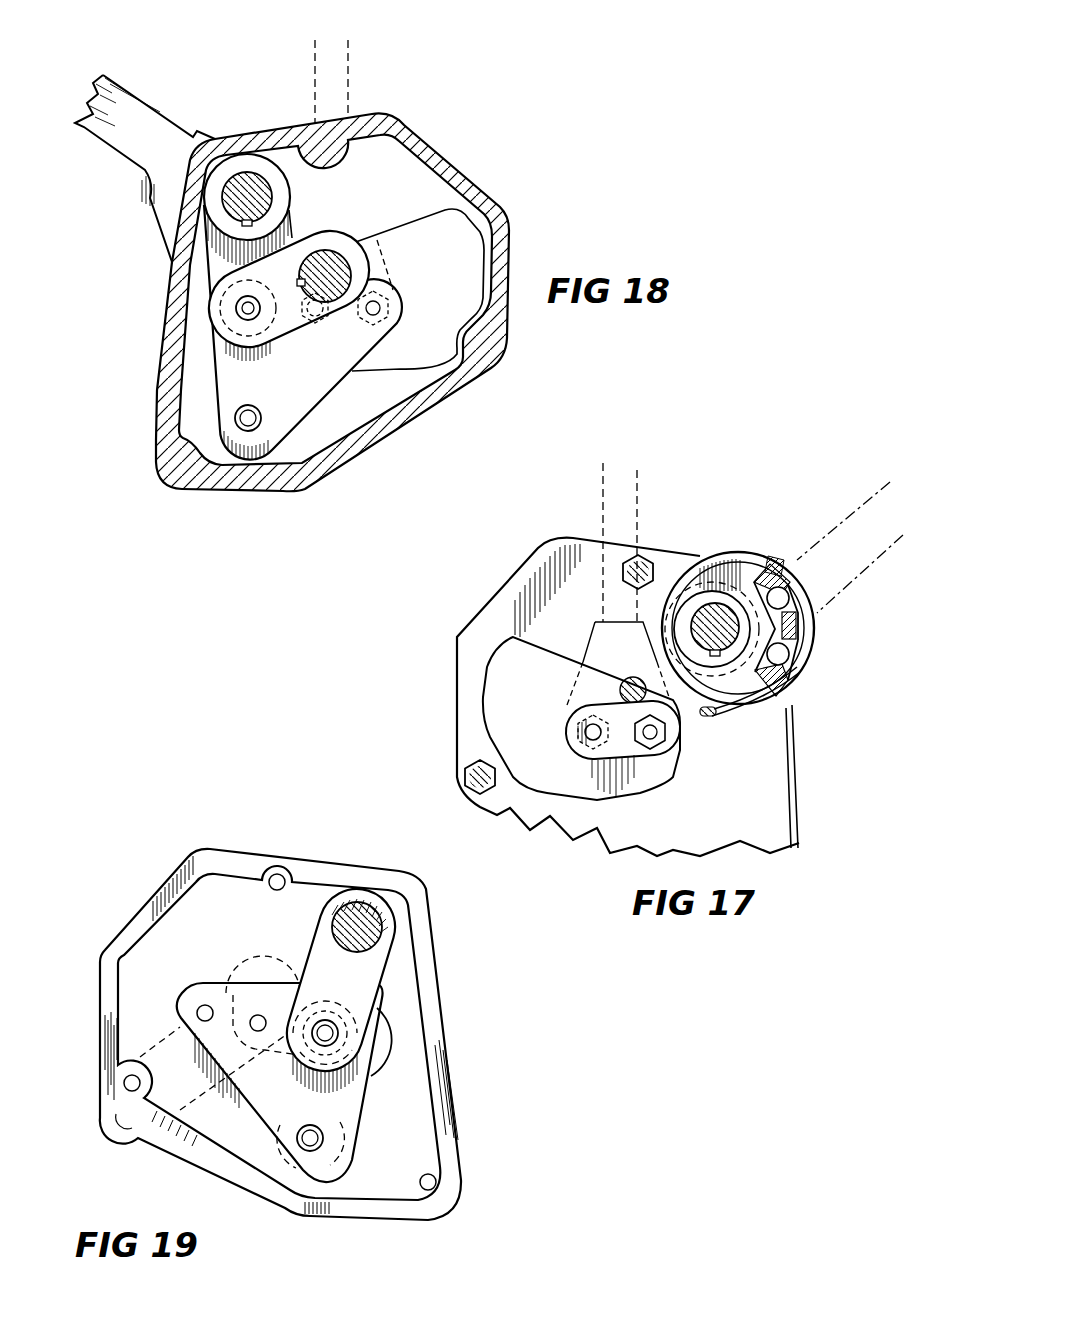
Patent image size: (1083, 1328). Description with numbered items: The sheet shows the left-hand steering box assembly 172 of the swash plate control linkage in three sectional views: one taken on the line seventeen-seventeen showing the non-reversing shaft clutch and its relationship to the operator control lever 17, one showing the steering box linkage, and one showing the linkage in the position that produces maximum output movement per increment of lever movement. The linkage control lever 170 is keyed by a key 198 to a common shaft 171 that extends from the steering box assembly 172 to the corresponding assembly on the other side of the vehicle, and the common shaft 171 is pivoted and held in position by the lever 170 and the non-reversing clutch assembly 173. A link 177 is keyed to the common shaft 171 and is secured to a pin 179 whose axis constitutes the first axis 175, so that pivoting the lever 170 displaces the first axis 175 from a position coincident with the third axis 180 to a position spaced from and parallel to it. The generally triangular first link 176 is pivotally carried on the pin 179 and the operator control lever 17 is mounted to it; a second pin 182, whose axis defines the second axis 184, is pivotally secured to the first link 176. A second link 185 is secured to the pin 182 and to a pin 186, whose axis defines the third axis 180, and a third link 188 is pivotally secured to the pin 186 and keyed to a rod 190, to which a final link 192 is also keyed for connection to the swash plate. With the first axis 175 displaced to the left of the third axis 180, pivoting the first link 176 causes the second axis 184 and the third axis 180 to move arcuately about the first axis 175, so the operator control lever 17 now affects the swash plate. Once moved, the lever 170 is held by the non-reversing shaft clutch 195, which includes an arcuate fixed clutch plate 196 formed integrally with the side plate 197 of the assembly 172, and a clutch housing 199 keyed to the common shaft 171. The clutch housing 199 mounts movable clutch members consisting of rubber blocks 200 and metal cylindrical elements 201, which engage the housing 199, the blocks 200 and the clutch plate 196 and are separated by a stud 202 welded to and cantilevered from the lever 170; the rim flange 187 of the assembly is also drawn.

In FIG. 18, the operator control lever 17 is at (350, 55).
In FIG. 17, the operator control lever 17 is at (600, 502).
In FIG. 18, the linkage control lever 170 is at (138, 93).
In FIG. 17, the linkage control lever 170 is at (862, 497).
In FIG. 18, the common shaft 171 is at (268, 188).
In FIG. 17, the common shaft 171 is at (704, 618).
In FIG. 19, the common shaft 171 is at (372, 920).
In FIG. 18, the steering box assembly 172 is at (480, 161).
In FIG. 17, the steering box assembly 172 is at (470, 601).
In FIG. 19, the steering box assembly 172 is at (257, 838).
In FIG. 17, the non-reversing clutch assembly 173 is at (733, 549).
In FIG. 19, the first axis 175 is at (334, 1033).
In FIG. 18, the first triangular link 176 is at (316, 411).
In FIG. 17, the first triangular link 176 is at (588, 759).
In FIG. 19, the first triangular link 176 is at (340, 1165).
In FIG. 18, the link 177 is at (290, 233).
In FIG. 19, the link 177 is at (385, 948).
In FIG. 19, the pin 179 is at (332, 1028).
In FIG. 18, the third axis 180 is at (244, 307).
In FIG. 19, the third axis 180 is at (334, 1033).
In FIG. 18, the second pin 182 is at (245, 427).
In FIG. 19, the second pin 182 is at (309, 1148).
In FIG. 18, the second axis 184 is at (244, 418).
In FIG. 19, the second axis 184 is at (302, 1143).
In FIG. 18, the second link 185 is at (223, 390).
In FIG. 19, the second link 185 is at (361, 1075).
In FIG. 18, the pin 186 is at (242, 312).
In FIG. 19, the pin 186 is at (356, 1038).
In FIG. 19, the rim flange 187 is at (155, 929).
In FIG. 18, the third link 188 is at (288, 328).
In FIG. 17, the third link 188 is at (598, 687).
In FIG. 19, the third link 188 is at (385, 1060).
In FIG. 18, the rod 190 is at (347, 272).
In FIG. 17, the rod 190 is at (640, 683).
In FIG. 19, the rod 190 is at (270, 983).
In FIG. 19, the final link 192 is at (114, 1130).
In FIG. 17, the non-reversing shaft clutch 195 is at (812, 633).
In FIG. 17, the fixed clutch plate 196 is at (797, 673).
In FIG. 18, the side plate 197 is at (405, 388).
In FIG. 17, the side plate 197 is at (470, 692).
In FIG. 17, the key 198 is at (717, 658).
In FIG. 17, the clutch housing 199 is at (737, 563).
In FIG. 17, the rubber blocks 200 is at (777, 560).
In FIG. 17, the metal cylindrical element 201 is at (788, 598).
In FIG. 17, the stud 202 is at (799, 622).